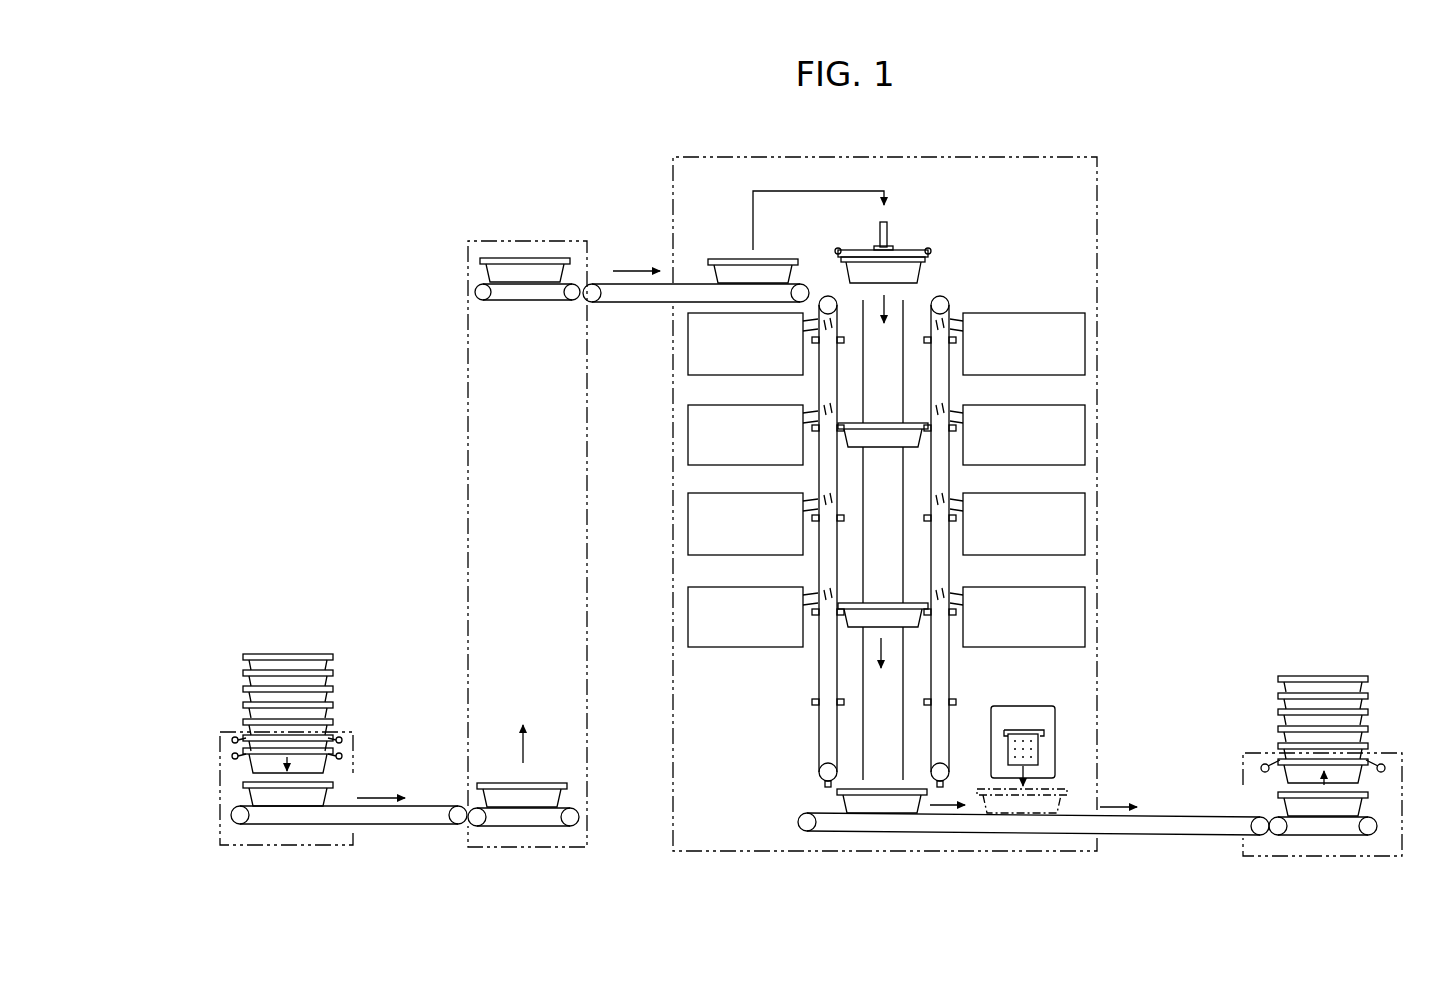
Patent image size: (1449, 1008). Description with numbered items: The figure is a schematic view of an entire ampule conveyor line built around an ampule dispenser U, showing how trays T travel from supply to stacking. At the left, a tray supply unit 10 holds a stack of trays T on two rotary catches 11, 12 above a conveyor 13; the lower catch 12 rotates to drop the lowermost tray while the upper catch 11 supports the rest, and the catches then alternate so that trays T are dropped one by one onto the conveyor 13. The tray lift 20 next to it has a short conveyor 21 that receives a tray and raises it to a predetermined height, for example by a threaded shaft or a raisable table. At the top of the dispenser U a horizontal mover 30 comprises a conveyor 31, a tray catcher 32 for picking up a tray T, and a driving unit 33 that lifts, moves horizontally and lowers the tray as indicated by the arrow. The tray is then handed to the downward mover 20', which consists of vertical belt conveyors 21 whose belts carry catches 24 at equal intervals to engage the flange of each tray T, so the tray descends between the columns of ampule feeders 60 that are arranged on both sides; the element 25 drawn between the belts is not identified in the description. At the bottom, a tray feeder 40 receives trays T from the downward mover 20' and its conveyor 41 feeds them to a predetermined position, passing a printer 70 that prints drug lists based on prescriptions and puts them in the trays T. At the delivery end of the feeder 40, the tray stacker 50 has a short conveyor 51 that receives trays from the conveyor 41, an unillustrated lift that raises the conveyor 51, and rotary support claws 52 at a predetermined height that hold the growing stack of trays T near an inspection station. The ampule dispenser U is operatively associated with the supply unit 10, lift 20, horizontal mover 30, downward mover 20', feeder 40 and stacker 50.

The tray supply unit 10 is at (278, 851).
The upper rotary catch 11 is at (235, 736).
The lower rotary catch 12 is at (342, 756).
The conveyor 13 is at (416, 826).
The tray lift 20 is at (486, 544).
The downward mover 20' is at (970, 509).
The short conveyor / vertical belt conveyor 21 is at (527, 827).
The catches 24 is at (838, 615).
The vertical guide rails 25 is at (865, 687).
The horizontal mover 30 is at (728, 232).
The conveyor 31 is at (631, 302).
The tray catcher 32 is at (908, 240).
The driving unit 33 is at (803, 189).
The tray feeder 40 is at (1160, 805).
The conveyor 41 is at (1153, 836).
The tray stacker 50 is at (1292, 670).
The short conveyor 51 is at (1305, 836).
The rotary support claws 52 is at (1264, 762).
The ampule feeders 60 is at (1068, 308).
The printer 70 is at (1058, 700).
The ampule dispenser U is at (932, 158).
The tray T is at (292, 652).